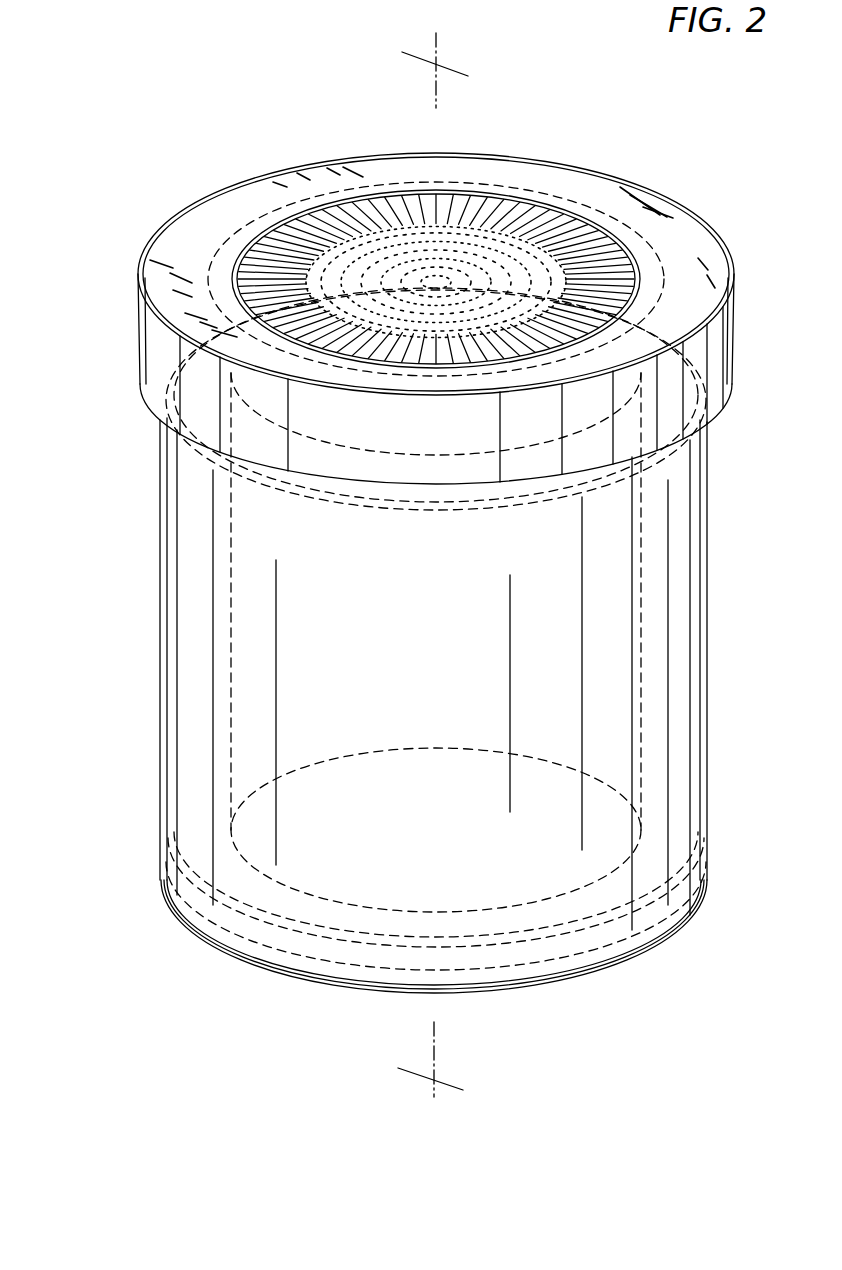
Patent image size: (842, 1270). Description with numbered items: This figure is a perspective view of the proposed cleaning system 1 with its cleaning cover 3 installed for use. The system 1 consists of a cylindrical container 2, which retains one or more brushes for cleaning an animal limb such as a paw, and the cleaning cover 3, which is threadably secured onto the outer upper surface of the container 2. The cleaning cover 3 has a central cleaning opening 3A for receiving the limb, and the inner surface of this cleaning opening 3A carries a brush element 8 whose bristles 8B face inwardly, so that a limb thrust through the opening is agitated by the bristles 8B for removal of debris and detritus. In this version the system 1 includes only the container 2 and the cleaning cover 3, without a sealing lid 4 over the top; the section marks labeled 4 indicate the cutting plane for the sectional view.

The cleaning system 1 is at (158, 190).
The container 2 is at (176, 580).
The cleaning cover 3 is at (143, 340).
The cleaning opening 3A is at (622, 246).
The sealing lid 4 is at (430, 72).
The brush 8 is at (508, 208).
The bristles 8B is at (450, 226).